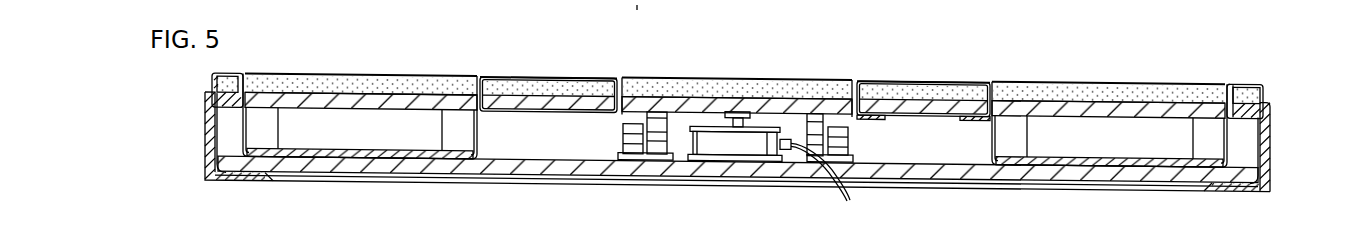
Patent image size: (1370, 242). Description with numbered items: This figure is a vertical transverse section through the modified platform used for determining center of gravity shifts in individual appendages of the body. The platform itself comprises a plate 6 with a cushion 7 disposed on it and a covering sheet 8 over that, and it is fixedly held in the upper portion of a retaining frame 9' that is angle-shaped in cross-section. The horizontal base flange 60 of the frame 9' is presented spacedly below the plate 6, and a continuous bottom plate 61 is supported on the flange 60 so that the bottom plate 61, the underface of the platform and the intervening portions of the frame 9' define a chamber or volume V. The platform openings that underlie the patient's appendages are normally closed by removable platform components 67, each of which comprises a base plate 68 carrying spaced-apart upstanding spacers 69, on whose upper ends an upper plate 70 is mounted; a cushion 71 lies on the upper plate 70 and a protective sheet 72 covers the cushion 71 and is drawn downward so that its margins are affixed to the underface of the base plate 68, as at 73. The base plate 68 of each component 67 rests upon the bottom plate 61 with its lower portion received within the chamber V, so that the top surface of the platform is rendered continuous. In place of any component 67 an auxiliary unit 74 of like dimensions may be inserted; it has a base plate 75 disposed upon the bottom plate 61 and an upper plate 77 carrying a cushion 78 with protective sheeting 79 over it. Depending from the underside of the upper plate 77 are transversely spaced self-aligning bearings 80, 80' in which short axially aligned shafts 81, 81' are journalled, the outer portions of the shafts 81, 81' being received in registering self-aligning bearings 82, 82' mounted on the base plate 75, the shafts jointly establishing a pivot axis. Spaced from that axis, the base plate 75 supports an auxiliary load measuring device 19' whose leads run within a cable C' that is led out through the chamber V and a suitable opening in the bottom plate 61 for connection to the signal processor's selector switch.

The base flange 60 is at (1238, 191).
The bottom plate 61 is at (1125, 176).
The removable platform component 67 is at (357, 74).
The base plate 68 is at (1095, 160).
The spacers 69 is at (1010, 146).
The upper plate 70 is at (1153, 104).
The cushion 71 is at (1106, 92).
The protective sheet 72 is at (1060, 83).
The affixation of sheet marginal portions 73 is at (1022, 162).
The auxiliary unit 74 is at (640, 77).
The upper plate 77 is at (658, 102).
The cushion 78 is at (703, 78).
The protective sheeting 79 is at (765, 82).
The self-aligning bearing 80 is at (667, 166).
The self-aligning bearing 80' is at (825, 97).
The shaft 81 is at (643, 182).
The shaft 81' is at (830, 195).
The self-aligning bearing 82 is at (605, 139).
The self-aligning bearing 82' is at (869, 143).
The auxiliary load measuring device 19' is at (739, 176).
The base plate 75 is at (770, 160).
The cable C' is at (849, 181).
The chamber V is at (919, 130).
The plate 6 is at (970, 106).
The cushion 7 is at (948, 95).
The covering sheet 8 is at (910, 80).
The retaining frame 9' is at (1293, 146).